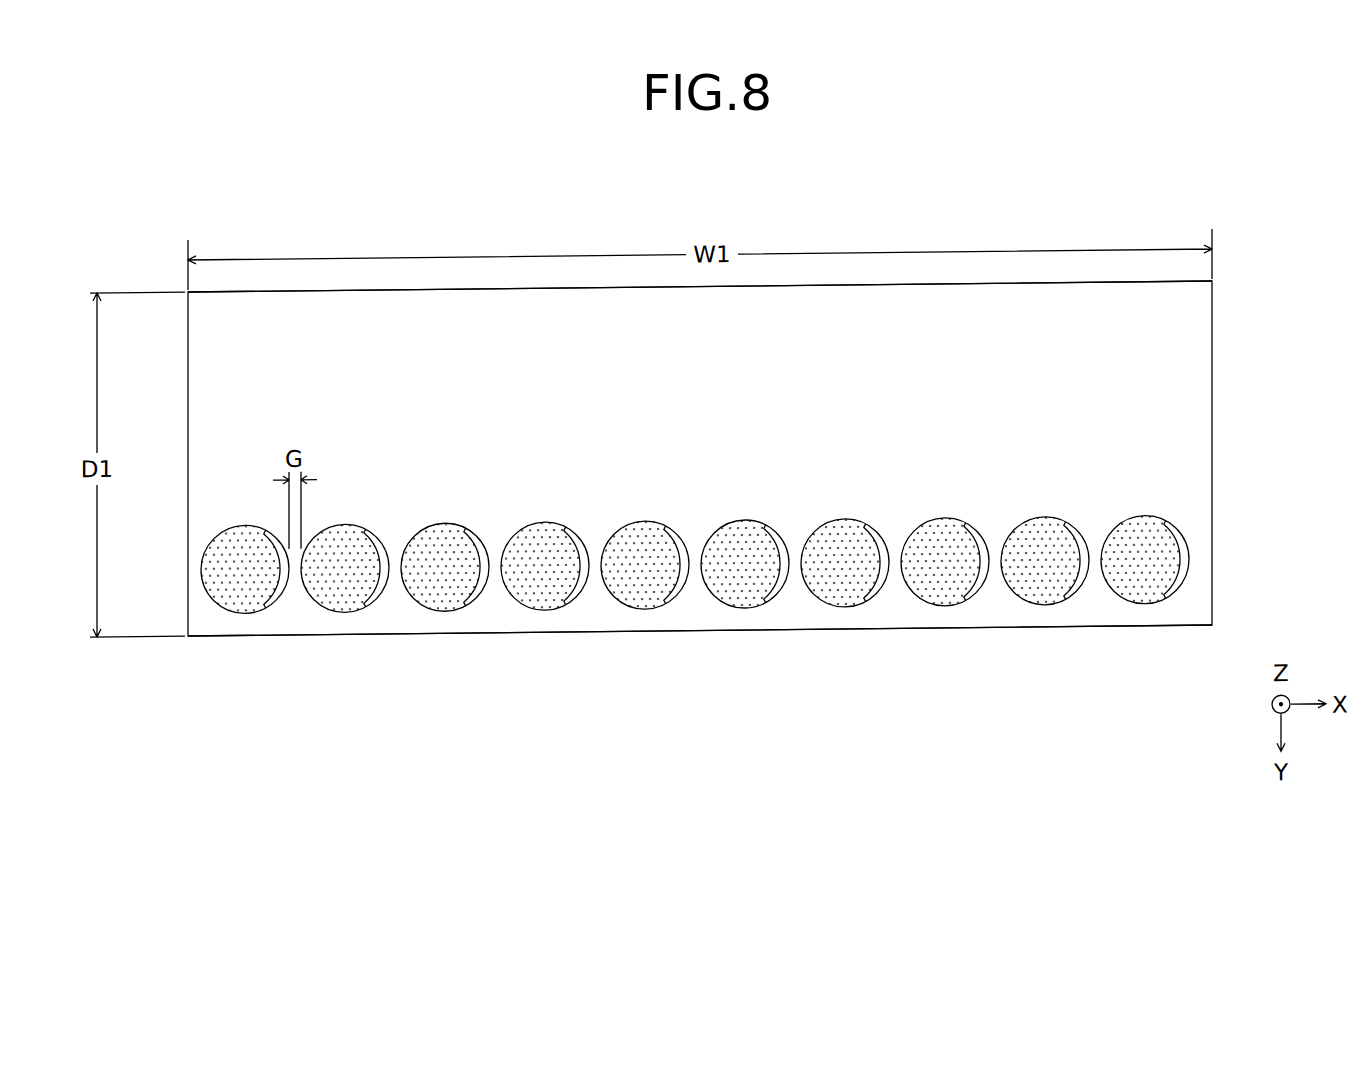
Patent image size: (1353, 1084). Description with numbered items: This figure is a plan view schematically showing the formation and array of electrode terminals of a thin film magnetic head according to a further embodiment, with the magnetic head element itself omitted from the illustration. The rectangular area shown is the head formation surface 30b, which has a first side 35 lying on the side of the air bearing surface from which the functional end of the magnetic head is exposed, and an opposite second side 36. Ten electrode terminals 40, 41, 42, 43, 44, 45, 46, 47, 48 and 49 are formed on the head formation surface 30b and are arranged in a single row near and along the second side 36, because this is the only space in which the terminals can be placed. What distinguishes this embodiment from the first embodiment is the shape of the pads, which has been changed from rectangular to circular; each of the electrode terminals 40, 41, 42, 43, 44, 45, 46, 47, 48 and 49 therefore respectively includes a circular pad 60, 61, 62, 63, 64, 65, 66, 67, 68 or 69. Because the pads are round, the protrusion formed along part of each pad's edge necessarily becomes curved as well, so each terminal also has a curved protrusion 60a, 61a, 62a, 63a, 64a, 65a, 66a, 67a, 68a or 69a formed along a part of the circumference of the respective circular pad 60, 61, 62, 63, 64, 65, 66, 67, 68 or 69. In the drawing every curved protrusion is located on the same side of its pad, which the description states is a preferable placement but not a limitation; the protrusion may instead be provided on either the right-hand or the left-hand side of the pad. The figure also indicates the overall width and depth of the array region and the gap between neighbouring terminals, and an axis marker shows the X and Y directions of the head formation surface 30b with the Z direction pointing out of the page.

The head formation surface 30b is at (1177, 366).
The first side 35 is at (867, 290).
The second side 36 is at (903, 636).
The electrode terminal 40 is at (245, 517).
The electrode terminal 41 is at (345, 517).
The electrode terminal 42 is at (445, 517).
The electrode terminal 43 is at (545, 517).
The electrode terminal 44 is at (645, 517).
The electrode terminal 45 is at (745, 517).
The electrode terminal 46 is at (845, 517).
The electrode terminal 47 is at (945, 517).
The electrode terminal 48 is at (1045, 517).
The electrode terminal 49 is at (1145, 517).
The circular pad 60 is at (233, 609).
The circular pad 61 is at (333, 609).
The circular pad 62 is at (433, 609).
The circular pad 63 is at (533, 609).
The circular pad 64 is at (633, 609).
The circular pad 65 is at (733, 609).
The circular pad 66 is at (833, 609).
The circular pad 67 is at (933, 609).
The circular pad 68 is at (1033, 609).
The circular pad 69 is at (1133, 609).
The curved protrusion 60a is at (279, 602).
The curved protrusion 61a is at (379, 602).
The curved protrusion 62a is at (479, 602).
The curved protrusion 63a is at (579, 602).
The curved protrusion 64a is at (679, 602).
The curved protrusion 65a is at (779, 602).
The curved protrusion 66a is at (879, 602).
The curved protrusion 67a is at (979, 602).
The curved protrusion 68a is at (1079, 602).
The curved protrusion 69a is at (1179, 602).